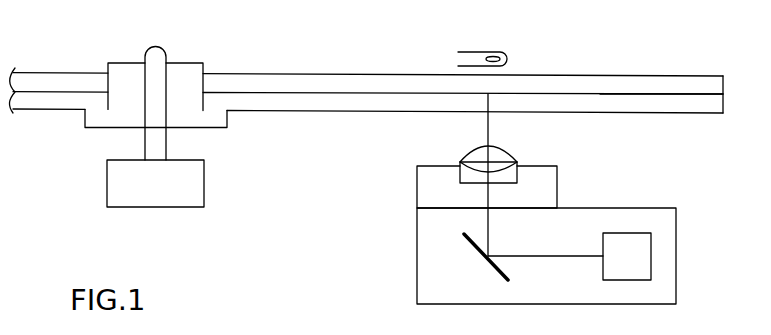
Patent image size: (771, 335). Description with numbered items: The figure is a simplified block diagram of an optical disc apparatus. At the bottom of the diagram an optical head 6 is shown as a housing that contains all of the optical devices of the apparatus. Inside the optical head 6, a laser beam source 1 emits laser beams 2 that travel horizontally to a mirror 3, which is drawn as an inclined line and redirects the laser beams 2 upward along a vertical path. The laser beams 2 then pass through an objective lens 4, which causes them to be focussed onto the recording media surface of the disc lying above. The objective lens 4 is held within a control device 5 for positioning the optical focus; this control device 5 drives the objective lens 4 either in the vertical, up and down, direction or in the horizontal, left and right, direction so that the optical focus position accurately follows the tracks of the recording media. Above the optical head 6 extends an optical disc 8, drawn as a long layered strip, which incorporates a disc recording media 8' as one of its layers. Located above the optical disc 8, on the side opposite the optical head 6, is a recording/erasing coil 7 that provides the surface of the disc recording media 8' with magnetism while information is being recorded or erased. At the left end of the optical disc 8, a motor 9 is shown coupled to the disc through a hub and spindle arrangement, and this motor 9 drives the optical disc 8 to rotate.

The laser beam source 1 is at (620, 282).
The laser beams 2 is at (488, 140).
The mirror 3 is at (493, 268).
The objective lens 4 is at (475, 172).
The control device for positioning an optical focus 5 is at (550, 185).
The optical head 6 is at (677, 263).
The recording/erasing coil 7 is at (490, 49).
The optical disc 8 is at (366, 65).
The disc recording media 8' is at (665, 74).
The motor 9 is at (200, 210).